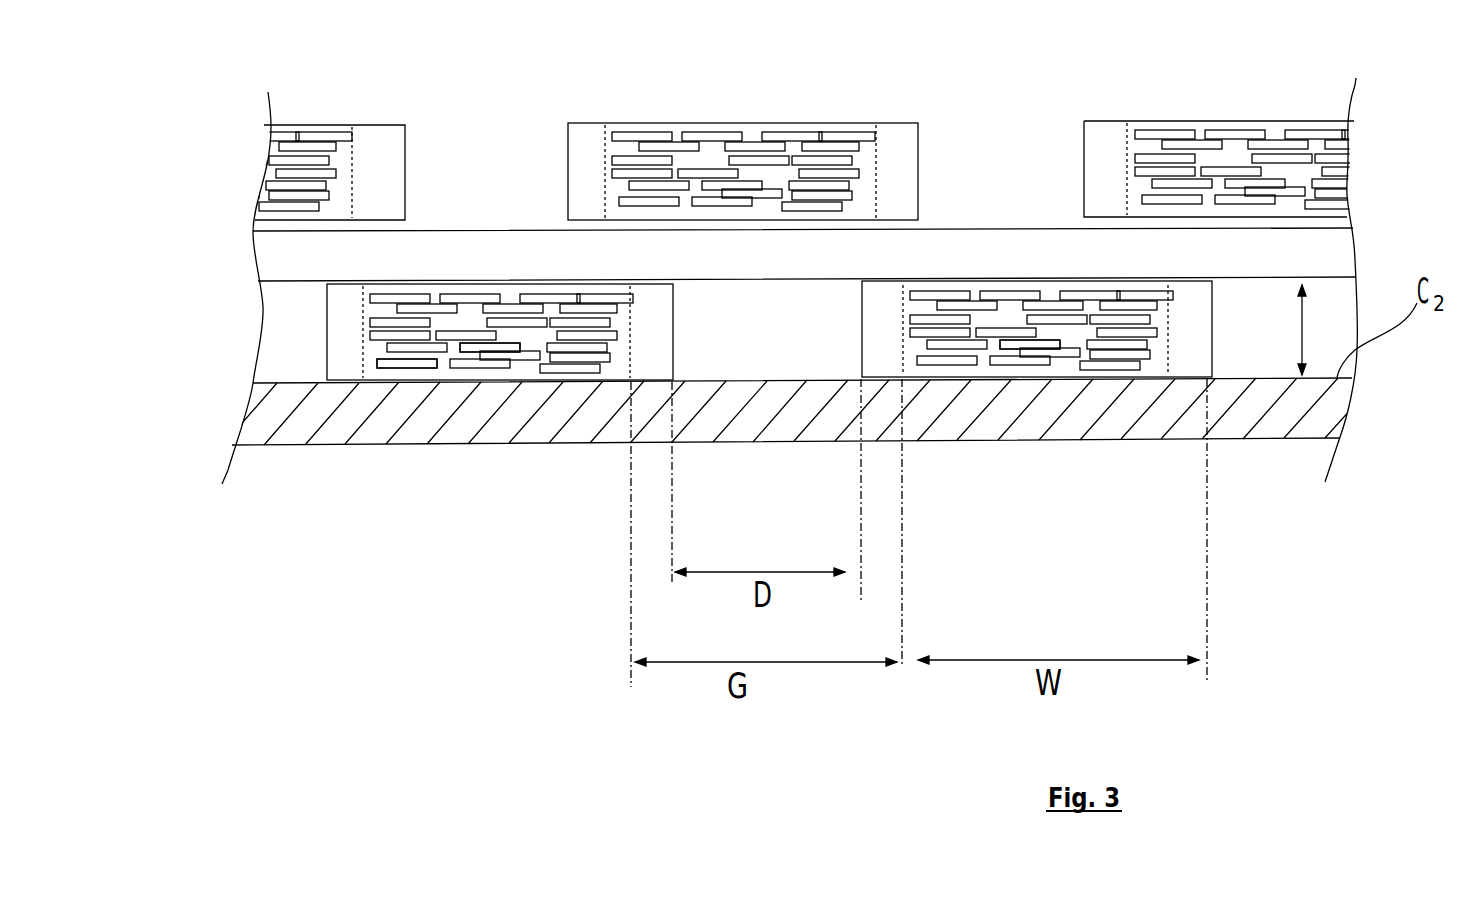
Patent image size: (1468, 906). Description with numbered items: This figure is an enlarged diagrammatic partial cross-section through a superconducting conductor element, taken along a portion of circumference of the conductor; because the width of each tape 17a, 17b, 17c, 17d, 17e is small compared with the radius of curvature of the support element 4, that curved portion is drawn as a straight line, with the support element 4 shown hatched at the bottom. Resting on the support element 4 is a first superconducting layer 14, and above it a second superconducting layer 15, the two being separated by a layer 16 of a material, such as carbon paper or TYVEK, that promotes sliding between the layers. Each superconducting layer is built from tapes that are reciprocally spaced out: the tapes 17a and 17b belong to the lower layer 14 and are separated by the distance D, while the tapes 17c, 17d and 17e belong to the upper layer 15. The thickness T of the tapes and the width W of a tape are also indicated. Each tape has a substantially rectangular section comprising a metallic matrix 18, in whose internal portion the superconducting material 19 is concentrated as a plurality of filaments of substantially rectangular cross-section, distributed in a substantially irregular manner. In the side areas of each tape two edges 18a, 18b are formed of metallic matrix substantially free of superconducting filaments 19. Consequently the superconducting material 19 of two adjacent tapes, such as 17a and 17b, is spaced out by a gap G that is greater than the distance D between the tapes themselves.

The support element 4 is at (263, 422).
The superconducting layer 14 is at (720, 417).
The superconducting layer 15 is at (743, 123).
The layer of sliding-promoting material 16 is at (255, 265).
The tape 17a is at (323, 358).
The tape 17b is at (858, 340).
The tape 17c is at (317, 125).
The tape 17d is at (602, 123).
The tape 17e is at (1120, 121).
The metallic matrix 18 is at (408, 375).
The edge 18a is at (347, 365).
The edge 18b is at (650, 365).
The superconducting material 19 is at (465, 363).